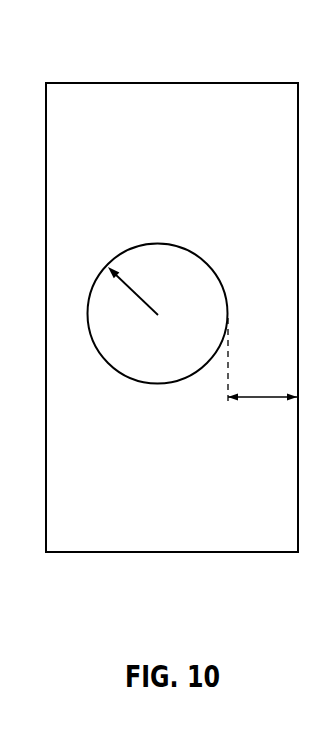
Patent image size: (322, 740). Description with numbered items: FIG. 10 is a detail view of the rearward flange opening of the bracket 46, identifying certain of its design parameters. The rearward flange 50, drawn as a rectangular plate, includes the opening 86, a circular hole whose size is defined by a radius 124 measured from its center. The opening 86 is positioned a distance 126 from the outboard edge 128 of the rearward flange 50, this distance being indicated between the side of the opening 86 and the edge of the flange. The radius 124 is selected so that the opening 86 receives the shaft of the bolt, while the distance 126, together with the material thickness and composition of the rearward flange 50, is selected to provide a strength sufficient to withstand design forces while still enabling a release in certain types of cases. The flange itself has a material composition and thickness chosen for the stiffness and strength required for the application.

The bracket 46 is at (53, 77).
The outboard edge 128 is at (172, 83).
The rearward flange 50 is at (106, 514).
The opening 86 is at (137, 384).
The radius 124 is at (135, 287).
The distance 126 is at (260, 398).